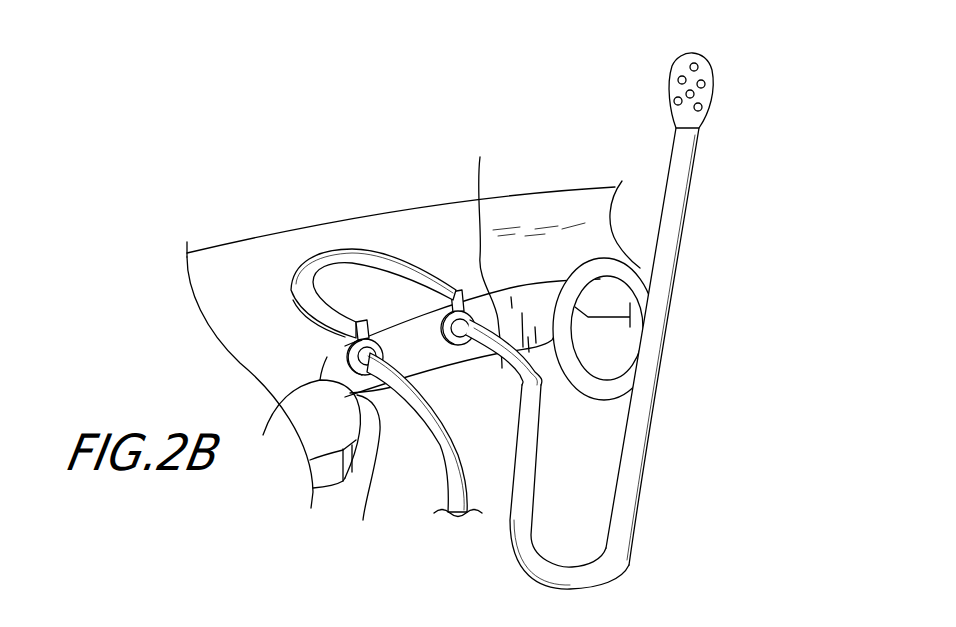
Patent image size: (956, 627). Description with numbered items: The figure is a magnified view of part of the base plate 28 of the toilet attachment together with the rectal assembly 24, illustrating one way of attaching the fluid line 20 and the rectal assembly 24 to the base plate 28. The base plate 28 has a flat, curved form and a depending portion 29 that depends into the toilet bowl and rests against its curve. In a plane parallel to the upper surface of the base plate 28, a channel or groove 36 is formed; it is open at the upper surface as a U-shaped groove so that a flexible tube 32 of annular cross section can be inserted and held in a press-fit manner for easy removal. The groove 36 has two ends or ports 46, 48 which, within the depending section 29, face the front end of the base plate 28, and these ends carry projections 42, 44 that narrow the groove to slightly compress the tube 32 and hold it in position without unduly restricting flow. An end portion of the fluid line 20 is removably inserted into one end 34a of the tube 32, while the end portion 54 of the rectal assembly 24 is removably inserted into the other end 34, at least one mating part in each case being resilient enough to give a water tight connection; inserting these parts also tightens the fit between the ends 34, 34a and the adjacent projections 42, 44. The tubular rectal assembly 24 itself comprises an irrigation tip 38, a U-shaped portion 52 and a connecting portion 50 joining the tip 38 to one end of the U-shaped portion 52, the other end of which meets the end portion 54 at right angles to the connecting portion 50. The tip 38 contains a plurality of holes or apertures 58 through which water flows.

The fluid line 20 is at (442, 445).
The rectal assembly 24 is at (688, 270).
The base plate 28 is at (521, 207).
The depending portion 29 is at (363, 520).
The flexible tube 32 is at (311, 283).
The end of tube 34 is at (447, 350).
The end of tube 34a is at (366, 322).
The channel or groove 36 is at (347, 251).
The irrigation (rectal) tip 38 is at (714, 100).
The projection 42 is at (323, 323).
The projection 44 is at (457, 292).
The end or port of channel 46 is at (433, 342).
The end or port of channel 48 is at (263, 435).
The connecting portion 50 is at (658, 387).
The U-shaped portion 52 is at (544, 583).
The end portion 54 is at (504, 241).
The holes or apertures 58 is at (693, 63).